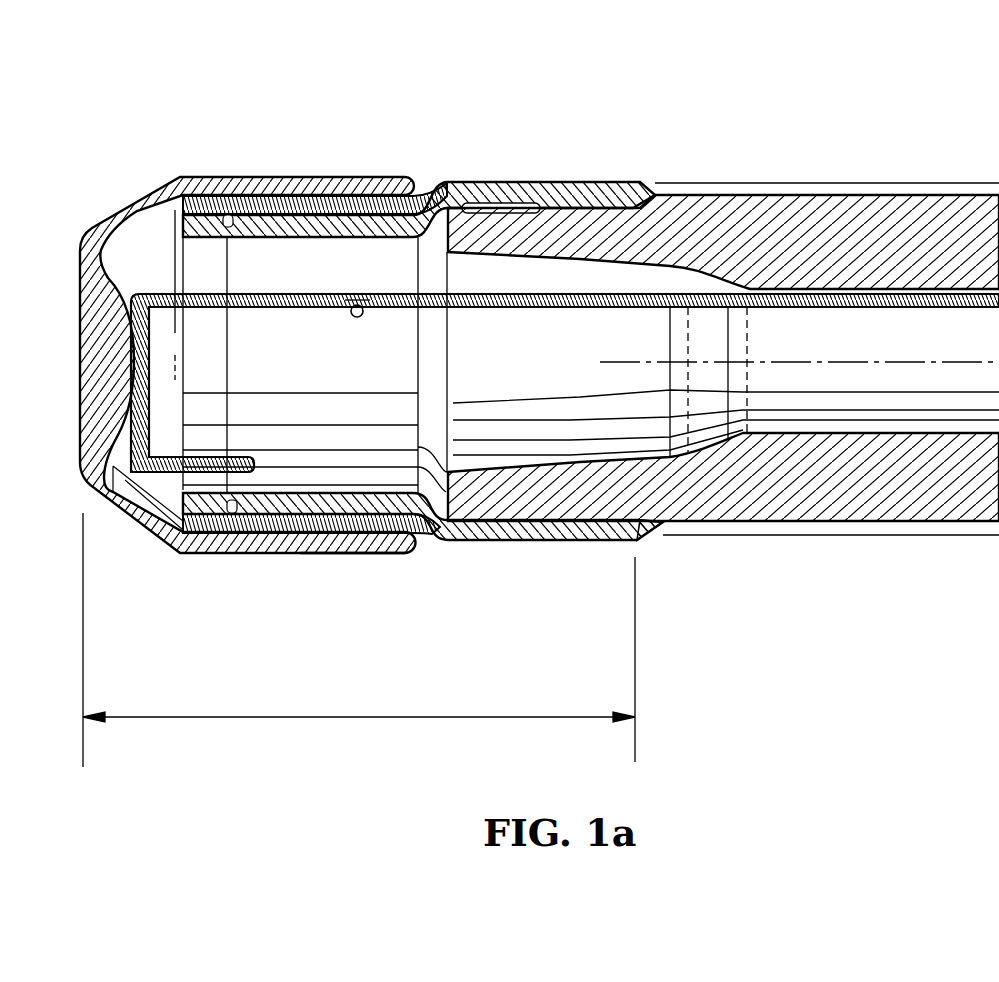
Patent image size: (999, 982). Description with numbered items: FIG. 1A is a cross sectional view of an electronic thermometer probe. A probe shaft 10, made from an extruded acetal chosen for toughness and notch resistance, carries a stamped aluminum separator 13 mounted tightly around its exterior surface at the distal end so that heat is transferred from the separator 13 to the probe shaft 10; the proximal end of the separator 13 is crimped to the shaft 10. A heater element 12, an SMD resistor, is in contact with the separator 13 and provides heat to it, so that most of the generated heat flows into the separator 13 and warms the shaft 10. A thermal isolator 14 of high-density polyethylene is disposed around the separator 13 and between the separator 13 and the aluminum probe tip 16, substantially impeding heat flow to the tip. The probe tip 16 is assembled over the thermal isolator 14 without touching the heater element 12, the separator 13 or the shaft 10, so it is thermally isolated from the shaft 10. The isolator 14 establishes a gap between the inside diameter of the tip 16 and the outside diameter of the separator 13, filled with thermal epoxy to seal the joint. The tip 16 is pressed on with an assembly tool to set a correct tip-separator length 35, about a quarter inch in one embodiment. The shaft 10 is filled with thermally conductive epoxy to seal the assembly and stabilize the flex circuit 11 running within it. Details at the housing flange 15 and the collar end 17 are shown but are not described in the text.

The probe shaft 10 is at (850, 230).
The flex circuit 11 is at (591, 290).
The heater element 12 is at (353, 300).
The separator 13 is at (512, 185).
The thermal isolator 14 is at (202, 205).
The bottom flange of housing 15 is at (389, 553).
The probe tip 16 is at (142, 203).
The wedge / lip at collar end 17 is at (660, 533).
The tip-separator length 35 is at (393, 718).